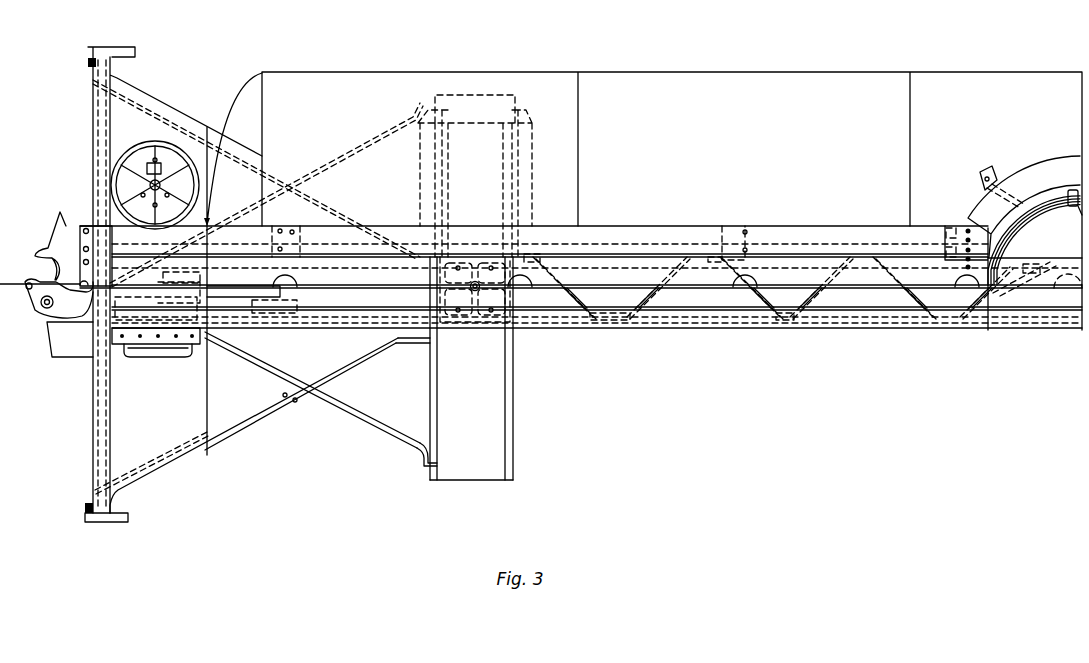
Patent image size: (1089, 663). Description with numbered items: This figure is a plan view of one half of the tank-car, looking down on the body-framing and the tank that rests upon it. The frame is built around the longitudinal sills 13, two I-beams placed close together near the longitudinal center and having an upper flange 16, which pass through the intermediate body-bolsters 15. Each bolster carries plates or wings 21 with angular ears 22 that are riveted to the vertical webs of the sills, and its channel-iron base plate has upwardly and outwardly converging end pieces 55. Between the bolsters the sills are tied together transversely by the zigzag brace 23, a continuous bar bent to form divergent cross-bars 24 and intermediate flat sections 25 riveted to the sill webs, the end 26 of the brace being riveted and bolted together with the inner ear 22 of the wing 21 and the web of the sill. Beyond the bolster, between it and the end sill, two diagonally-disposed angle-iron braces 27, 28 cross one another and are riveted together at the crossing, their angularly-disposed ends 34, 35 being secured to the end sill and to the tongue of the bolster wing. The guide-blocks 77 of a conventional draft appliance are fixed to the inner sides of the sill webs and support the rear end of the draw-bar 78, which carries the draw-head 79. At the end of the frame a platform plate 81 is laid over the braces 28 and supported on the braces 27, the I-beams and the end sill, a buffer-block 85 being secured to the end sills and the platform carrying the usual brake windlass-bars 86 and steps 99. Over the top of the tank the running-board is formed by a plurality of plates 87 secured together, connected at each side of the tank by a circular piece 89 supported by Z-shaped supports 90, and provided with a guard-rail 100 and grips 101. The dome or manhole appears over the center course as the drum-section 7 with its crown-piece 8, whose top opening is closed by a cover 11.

The drum-section 7 is at (1070, 222).
The crown-piece 8 is at (1069, 231).
The cover 11 is at (1052, 278).
The longitudinal sills 13 is at (690, 322).
The body-bolsters 15 is at (529, 368).
The upper flange 16 is at (733, 326).
The plates or wings 21 is at (428, 380).
The angular ears 22 is at (412, 327).
The brace 23 is at (745, 298).
The divergent cross-bars 24 is at (568, 291).
The intermediate flat sections 25 is at (716, 258).
The end of the brace 26 is at (533, 257).
The diagonally-disposed angle-iron brace 27 is at (254, 425).
The diagonally-disposed angle-iron brace 28 is at (312, 390).
The angularly-disposed end 34 is at (408, 335).
The angularly-disposed end 35 is at (426, 460).
The end pieces 55 is at (471, 451).
The guide-blocks 77 is at (255, 303).
The draw-bar 78 is at (282, 296).
The draw-head 79 is at (59, 318).
The plate 81 is at (163, 125).
The buffer-block 85 is at (56, 225).
The brake windlass-bars 86 is at (149, 149).
The plates 87 is at (97, 228).
The circular piece 89 is at (1045, 163).
The Z-shaped supports 90 is at (986, 174).
The steps 99 is at (107, 525).
The guard-rail 100 is at (1034, 230).
The grips 101 is at (130, 352).